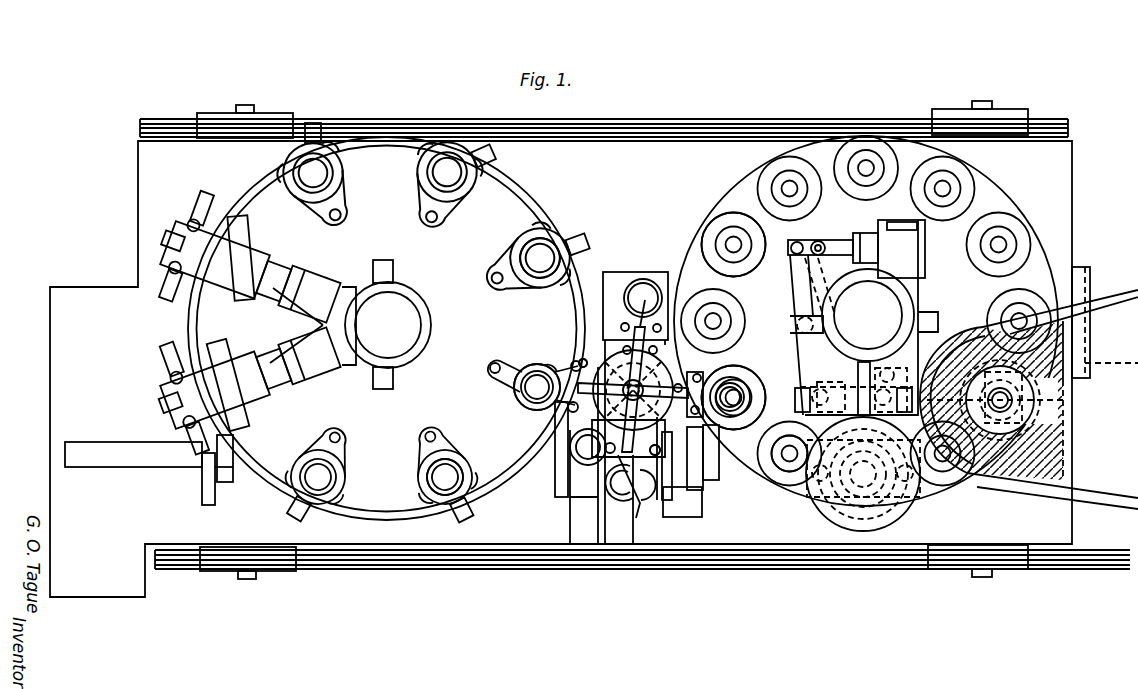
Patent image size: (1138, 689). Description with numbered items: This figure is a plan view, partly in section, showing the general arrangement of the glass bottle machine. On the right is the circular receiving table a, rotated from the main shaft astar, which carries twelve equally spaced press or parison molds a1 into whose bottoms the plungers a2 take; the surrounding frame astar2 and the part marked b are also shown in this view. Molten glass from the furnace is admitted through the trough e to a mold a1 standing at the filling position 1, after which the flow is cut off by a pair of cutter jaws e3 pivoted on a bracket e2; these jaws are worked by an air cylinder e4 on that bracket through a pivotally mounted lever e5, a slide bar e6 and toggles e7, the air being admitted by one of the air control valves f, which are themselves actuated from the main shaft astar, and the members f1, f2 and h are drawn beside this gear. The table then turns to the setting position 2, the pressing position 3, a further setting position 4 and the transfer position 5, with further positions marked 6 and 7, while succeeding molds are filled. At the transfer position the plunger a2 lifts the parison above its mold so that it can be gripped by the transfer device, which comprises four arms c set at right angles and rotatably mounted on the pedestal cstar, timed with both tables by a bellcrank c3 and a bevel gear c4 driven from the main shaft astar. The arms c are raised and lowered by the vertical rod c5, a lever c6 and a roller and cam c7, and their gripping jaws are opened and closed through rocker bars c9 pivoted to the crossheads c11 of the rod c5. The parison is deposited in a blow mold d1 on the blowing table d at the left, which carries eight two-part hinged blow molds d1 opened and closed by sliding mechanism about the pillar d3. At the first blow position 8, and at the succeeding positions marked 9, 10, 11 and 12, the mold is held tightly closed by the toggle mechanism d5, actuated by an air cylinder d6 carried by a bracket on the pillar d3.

The receiving table a is at (992, 193).
The press or parison molds a1 is at (1003, 303).
The plungers a2 is at (743, 225).
The main shaft astar is at (126, 462).
The frame (a**) astar2 is at (1055, 213).
The wheel support b is at (884, 503).
The transfer arms c is at (615, 333).
The pedestal cstar is at (613, 296).
The bellcrank c3 is at (643, 283).
The bevel gear c4 is at (572, 468).
The vertical rod c5 is at (545, 425).
The lever c6 is at (748, 392).
The roller and cam c7 is at (622, 349).
The rocker bars c9 is at (527, 364).
The crossheads c11 is at (655, 440).
The blowing table d is at (513, 200).
The blow molds d1 is at (512, 237).
The pillar d3 is at (350, 324).
The toggle mechanism d5 is at (189, 224).
The air cylinder d6 is at (305, 276).
The trough e is at (1057, 437).
The bracket e2 is at (908, 292).
The cutter jaws e3 is at (1043, 385).
The air cylinder e4 is at (907, 245).
The lever e5 is at (800, 294).
The slide bar e6 is at (848, 383).
The toggles e7 is at (893, 367).
The air control valves f is at (207, 480).
The ring (f') f1 is at (849, 318).
The pins f2 is at (840, 502).
The lever arm h is at (1113, 290).
The filling position 1 is at (1016, 400).
The setting position 2 is at (1046, 491).
The pressing position 3 is at (863, 474).
The setting position 4 is at (781, 468).
The transfer position 5 is at (740, 398).
The roller 6 is at (522, 387).
The carrier rollers 7 is at (380, 463).
The first blow position 8 is at (226, 385).
The arm 9 is at (226, 261).
The carrier roller 10 is at (320, 181).
The carrier roller 11 is at (446, 185).
The carrier roller 12 is at (532, 263).